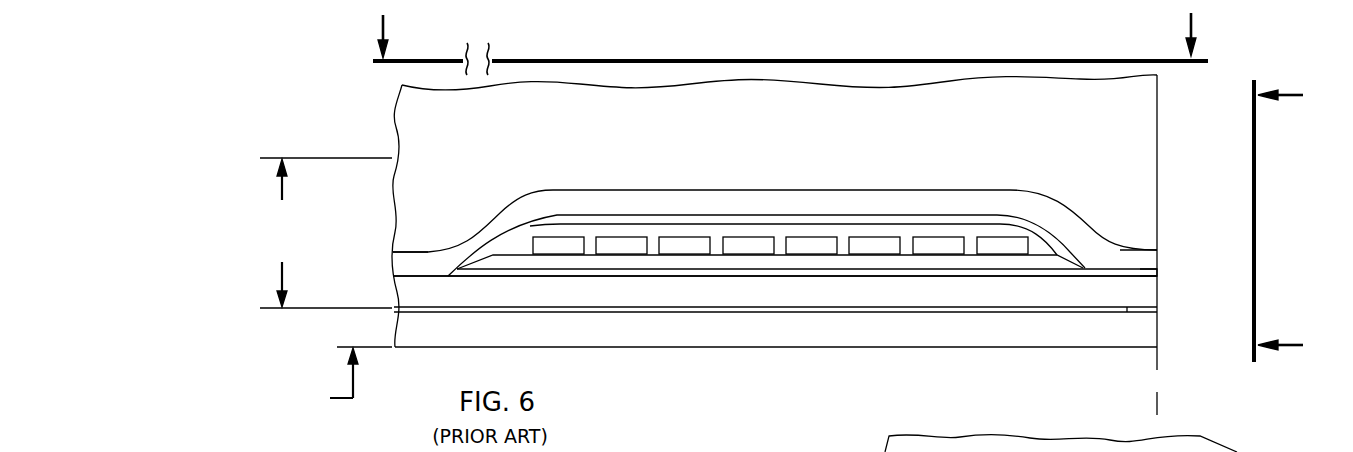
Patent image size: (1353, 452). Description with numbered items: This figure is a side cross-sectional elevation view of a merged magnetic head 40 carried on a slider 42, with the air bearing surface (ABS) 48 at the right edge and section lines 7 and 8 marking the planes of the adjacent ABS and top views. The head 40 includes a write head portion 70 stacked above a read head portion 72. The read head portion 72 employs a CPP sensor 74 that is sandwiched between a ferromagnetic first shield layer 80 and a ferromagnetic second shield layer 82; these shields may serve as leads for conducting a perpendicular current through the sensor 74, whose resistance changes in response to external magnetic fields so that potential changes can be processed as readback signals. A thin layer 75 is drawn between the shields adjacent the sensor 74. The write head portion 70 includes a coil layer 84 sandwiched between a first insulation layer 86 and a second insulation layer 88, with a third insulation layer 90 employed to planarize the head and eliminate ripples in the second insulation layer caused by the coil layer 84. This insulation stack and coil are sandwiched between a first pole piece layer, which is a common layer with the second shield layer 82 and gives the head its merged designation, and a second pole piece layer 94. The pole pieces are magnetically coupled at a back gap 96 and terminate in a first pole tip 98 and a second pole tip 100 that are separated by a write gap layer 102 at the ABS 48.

The section line 7- 7 is at (1291, 221).
The section line 8- 8 is at (790, 44).
The merged magnetic head 40 is at (385, 90).
The slider 42 is at (1137, 104).
The air bearing surface (ABS) 48 is at (1158, 382).
The write head portion 70 is at (314, 233).
The read head portion 72 is at (311, 378).
The CPP sensor 74 is at (1152, 310).
The read gap layer 75 is at (728, 313).
The first shield layer 80 is at (907, 332).
The second shield layer 82 is at (1009, 290).
The coil layer 84 is at (815, 245).
The first insulation layer 86 is at (635, 270).
The second insulation layer 88 is at (1040, 247).
The third insulation layer 90 is at (558, 222).
The second pole piece layer 94 is at (920, 192).
The back gap 96 is at (418, 274).
The first pole tip 98 is at (1159, 292).
The second pole tip 100 is at (1152, 260).
The write gap layer 102 is at (1155, 273).